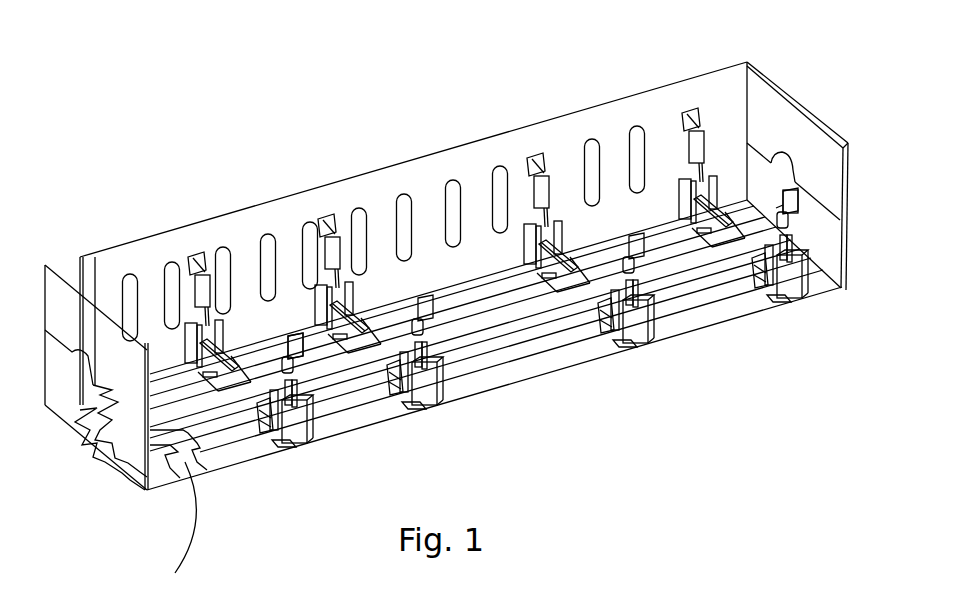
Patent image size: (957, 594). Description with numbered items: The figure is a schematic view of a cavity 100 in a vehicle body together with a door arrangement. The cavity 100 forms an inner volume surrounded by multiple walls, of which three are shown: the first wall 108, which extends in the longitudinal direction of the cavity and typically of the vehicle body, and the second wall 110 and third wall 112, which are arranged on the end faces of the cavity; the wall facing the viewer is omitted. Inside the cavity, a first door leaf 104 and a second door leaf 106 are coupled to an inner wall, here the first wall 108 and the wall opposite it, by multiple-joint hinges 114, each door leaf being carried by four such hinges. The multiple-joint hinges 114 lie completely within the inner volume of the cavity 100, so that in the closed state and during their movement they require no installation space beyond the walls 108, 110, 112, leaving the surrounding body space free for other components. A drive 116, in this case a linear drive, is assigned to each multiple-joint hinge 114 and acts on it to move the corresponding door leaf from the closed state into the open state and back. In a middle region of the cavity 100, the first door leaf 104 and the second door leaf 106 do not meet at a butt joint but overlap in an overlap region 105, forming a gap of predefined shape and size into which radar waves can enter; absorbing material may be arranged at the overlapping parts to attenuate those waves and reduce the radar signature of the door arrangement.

The cavity 100 is at (440, 211).
The first door leaf 104 is at (477, 308).
The overlap region 105 is at (697, 270).
The second door leaf 106 is at (567, 343).
The first wall 108 is at (612, 125).
The second wall 110 is at (63, 302).
The third wall 112 is at (799, 98).
The multiple-joint hinge 114 is at (302, 420).
The drive 116 is at (305, 397).